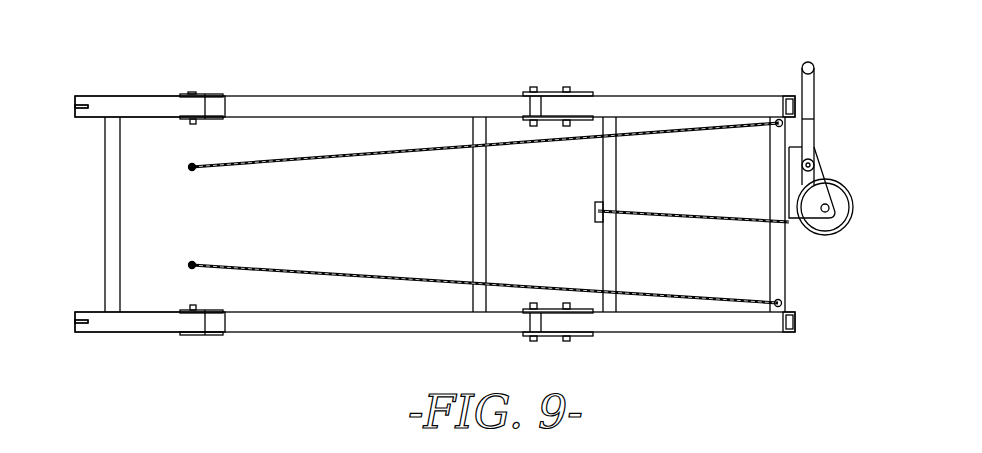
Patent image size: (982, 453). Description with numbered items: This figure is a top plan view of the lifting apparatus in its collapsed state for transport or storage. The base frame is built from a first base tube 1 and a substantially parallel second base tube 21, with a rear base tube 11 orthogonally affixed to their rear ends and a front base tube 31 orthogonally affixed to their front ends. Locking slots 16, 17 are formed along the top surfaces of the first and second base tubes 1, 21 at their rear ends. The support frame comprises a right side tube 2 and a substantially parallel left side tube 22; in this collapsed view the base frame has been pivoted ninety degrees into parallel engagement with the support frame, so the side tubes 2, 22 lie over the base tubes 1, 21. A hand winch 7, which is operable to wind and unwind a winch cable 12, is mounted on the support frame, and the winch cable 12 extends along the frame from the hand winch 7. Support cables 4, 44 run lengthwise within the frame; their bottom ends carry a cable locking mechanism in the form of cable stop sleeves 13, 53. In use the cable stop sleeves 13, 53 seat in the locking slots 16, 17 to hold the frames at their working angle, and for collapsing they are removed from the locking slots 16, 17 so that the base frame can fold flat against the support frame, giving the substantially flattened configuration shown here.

The first base tube 1 is at (146, 95).
The right side tube 2 is at (365, 95).
The support cable 4 is at (338, 160).
The hand winch 7 is at (826, 158).
The rear base tube 11 is at (103, 195).
The winch cable 12 is at (737, 224).
The cable stop sleeve 13 is at (188, 172).
The locking slot 16 is at (80, 96).
The locking slot 17 is at (81, 334).
The second base tube 21 is at (125, 334).
The left side tube 22 is at (349, 334).
The front base tube 31 is at (472, 203).
The support cable 44 is at (337, 278).
The cable stop sleeve 53 is at (200, 259).